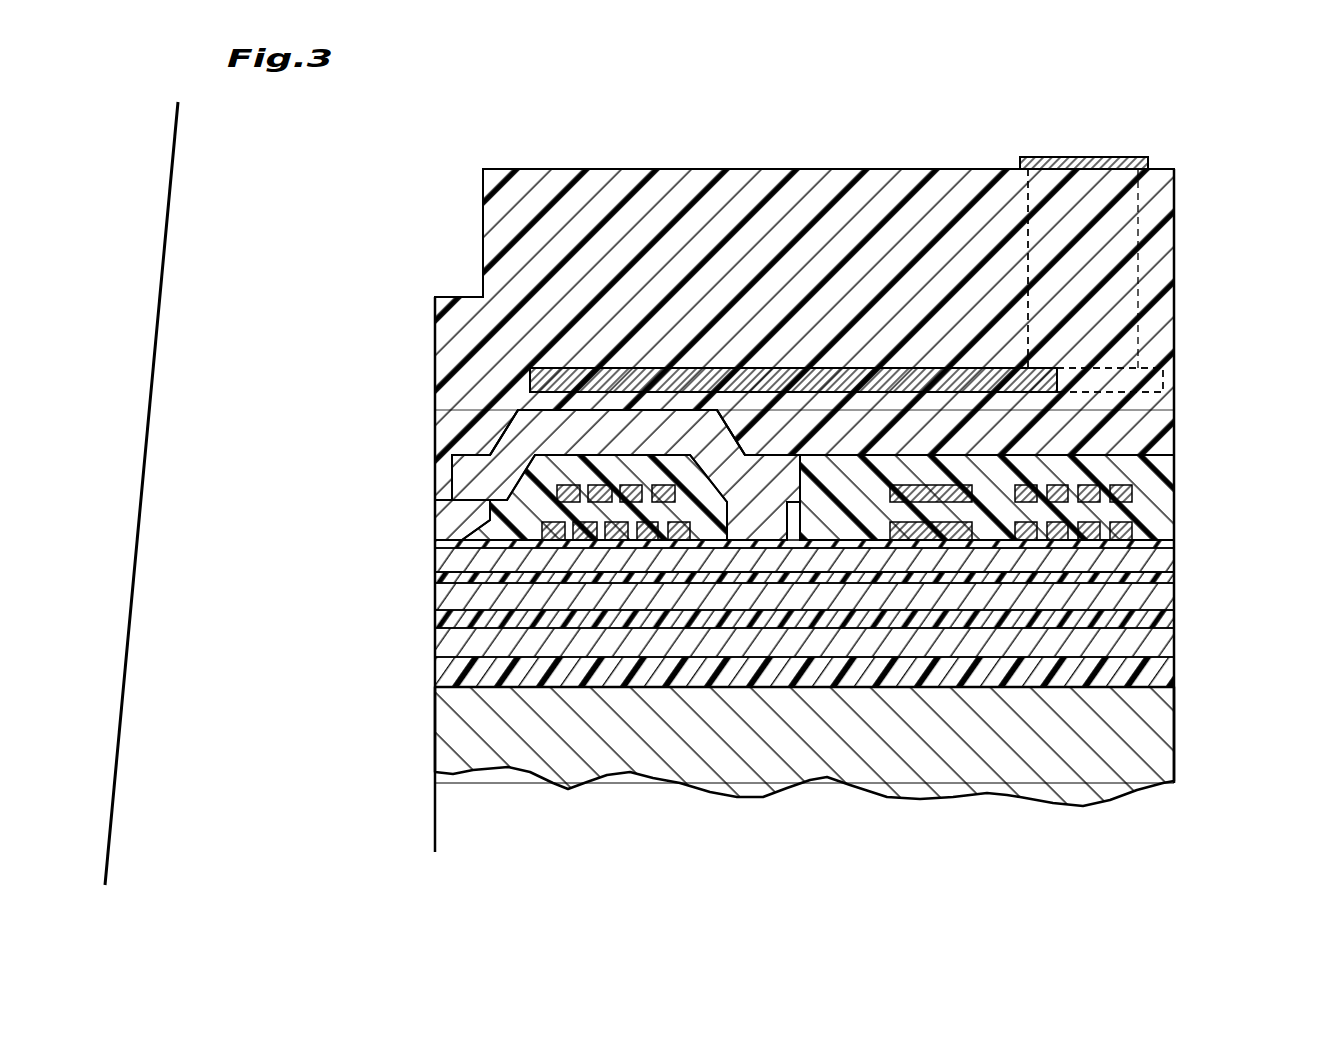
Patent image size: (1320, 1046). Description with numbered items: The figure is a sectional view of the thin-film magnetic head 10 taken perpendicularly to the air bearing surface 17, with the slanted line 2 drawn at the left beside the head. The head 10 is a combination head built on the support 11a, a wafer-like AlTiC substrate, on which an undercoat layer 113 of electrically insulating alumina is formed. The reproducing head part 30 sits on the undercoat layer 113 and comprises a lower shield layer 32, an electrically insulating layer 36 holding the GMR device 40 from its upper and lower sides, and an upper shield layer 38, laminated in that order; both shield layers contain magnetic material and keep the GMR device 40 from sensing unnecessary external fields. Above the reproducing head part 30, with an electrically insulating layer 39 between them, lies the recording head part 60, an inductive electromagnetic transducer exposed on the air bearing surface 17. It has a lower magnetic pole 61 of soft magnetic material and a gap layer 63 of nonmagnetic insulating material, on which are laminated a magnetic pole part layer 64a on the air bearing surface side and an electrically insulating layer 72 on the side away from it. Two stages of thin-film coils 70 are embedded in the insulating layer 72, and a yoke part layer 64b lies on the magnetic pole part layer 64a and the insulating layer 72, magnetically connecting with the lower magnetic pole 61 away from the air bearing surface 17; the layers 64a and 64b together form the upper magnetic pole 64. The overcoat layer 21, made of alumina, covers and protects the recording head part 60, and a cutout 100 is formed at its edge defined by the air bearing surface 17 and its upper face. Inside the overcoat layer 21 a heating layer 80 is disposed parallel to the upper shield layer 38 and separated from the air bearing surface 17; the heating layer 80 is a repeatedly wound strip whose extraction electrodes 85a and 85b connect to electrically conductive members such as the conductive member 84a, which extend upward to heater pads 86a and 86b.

The line 2 is at (172, 172).
The thin-film magnetic head 10 is at (298, 262).
The cutout 100 is at (483, 230).
The overcoat layer 21 is at (1160, 262).
The heater pad 86a is at (1109, 131).
The heater pad 86b is at (1098, 157).
The electrically conductive member 84a is at (1162, 244).
The extraction electrode 85a is at (1188, 366).
The extraction electrode 85b is at (1175, 375).
The heating layer 80 is at (1030, 393).
The electrically insulating layer 72 is at (573, 460).
The thin-film coils 70 is at (560, 495).
The recording head part 60 is at (306, 298).
The upper magnetic pole 64 is at (351, 417).
The magnetic pole part layer 64a is at (520, 520).
The yoke part layer 64b is at (545, 492).
The gap layer 63 is at (455, 521).
The lower magnetic pole 61 is at (450, 550).
The electrically insulating layer 39 is at (1174, 578).
The upper shield layer 38 is at (445, 587).
The GMR device 40 is at (450, 617).
The electrically insulating layer 36 is at (455, 643).
The lower shield layer 32 is at (457, 660).
The reproducing head part 30 is at (349, 578).
The undercoat layer 113 is at (1158, 670).
The support 11a is at (1160, 745).
The air bearing surface 17 is at (435, 808).